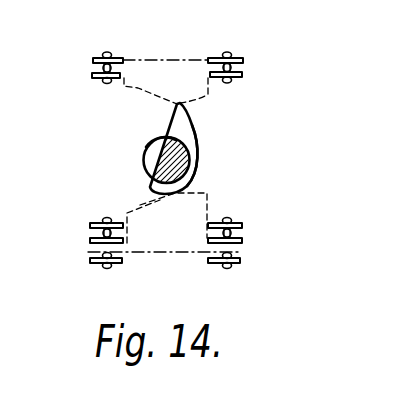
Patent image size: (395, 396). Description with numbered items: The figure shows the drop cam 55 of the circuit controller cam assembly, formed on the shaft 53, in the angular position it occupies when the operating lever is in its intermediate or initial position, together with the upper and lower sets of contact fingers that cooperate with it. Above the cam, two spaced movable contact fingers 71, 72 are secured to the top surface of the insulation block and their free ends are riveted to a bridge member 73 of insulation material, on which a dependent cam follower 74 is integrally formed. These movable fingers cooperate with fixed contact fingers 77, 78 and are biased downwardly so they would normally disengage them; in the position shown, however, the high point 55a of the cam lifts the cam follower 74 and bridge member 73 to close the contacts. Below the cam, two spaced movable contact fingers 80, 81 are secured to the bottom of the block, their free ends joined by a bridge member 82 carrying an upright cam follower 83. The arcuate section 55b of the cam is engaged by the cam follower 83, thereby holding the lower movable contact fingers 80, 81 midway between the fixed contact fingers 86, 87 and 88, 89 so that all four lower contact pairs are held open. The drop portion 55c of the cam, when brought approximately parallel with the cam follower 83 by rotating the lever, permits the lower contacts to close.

The fixed contact finger 77 is at (93, 60).
The movable contact finger 71 is at (92, 76).
The bridge member 73 is at (194, 57).
The fixed contact finger 78 is at (247, 57).
The movable contact finger 72 is at (243, 75).
The cam follower 74 is at (153, 90).
The high point 55a is at (208, 95).
The drop cam 55 is at (193, 135).
The arcuate section 55b is at (197, 172).
The drop portion 55c is at (166, 138).
The shaft 53 is at (144, 158).
The cam follower 83 is at (203, 193).
The fixed contact finger 86 is at (91, 222).
The movable contact finger 80 is at (90, 240).
The fixed contact finger 87 is at (90, 261).
The fixed contact finger 88 is at (242, 224).
The movable contact finger 81 is at (242, 240).
The fixed contact finger 89 is at (240, 260).
The bridge member 82 is at (186, 248).